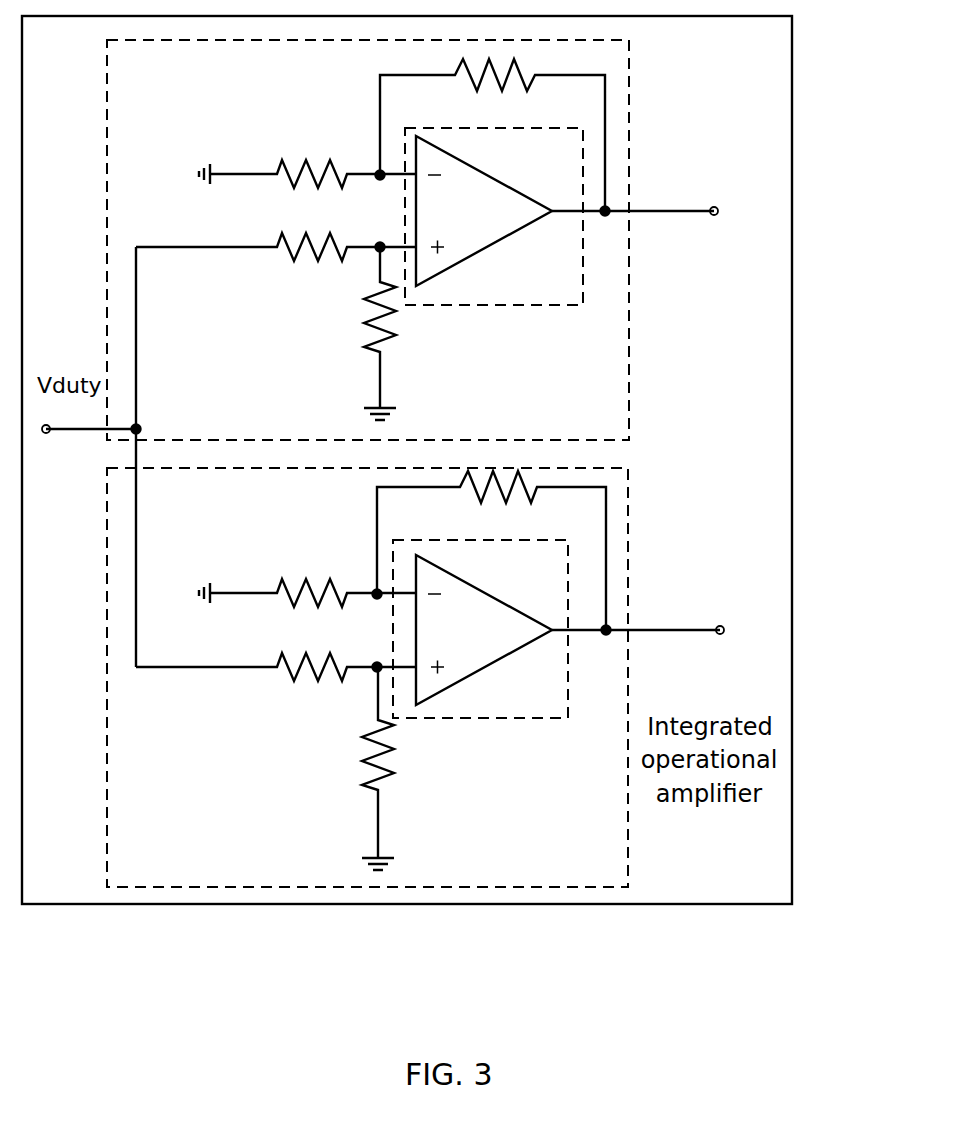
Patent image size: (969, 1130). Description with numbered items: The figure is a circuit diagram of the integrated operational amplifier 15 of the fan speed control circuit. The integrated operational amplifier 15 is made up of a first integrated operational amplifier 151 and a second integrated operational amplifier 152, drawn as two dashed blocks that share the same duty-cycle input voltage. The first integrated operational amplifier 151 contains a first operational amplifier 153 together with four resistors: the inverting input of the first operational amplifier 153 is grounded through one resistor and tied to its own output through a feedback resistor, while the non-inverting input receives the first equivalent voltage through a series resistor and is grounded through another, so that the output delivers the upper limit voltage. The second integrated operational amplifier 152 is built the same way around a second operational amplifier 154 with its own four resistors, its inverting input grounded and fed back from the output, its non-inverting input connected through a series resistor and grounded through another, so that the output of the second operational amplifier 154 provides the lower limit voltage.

The integrated operational amplifier 15 is at (792, 92).
The first integrated operational amplifier 151 is at (629, 315).
The second integrated operational amplifier 152 is at (629, 477).
The first operational amplifier 153 is at (583, 247).
The second operational amplifier 154 is at (568, 571).